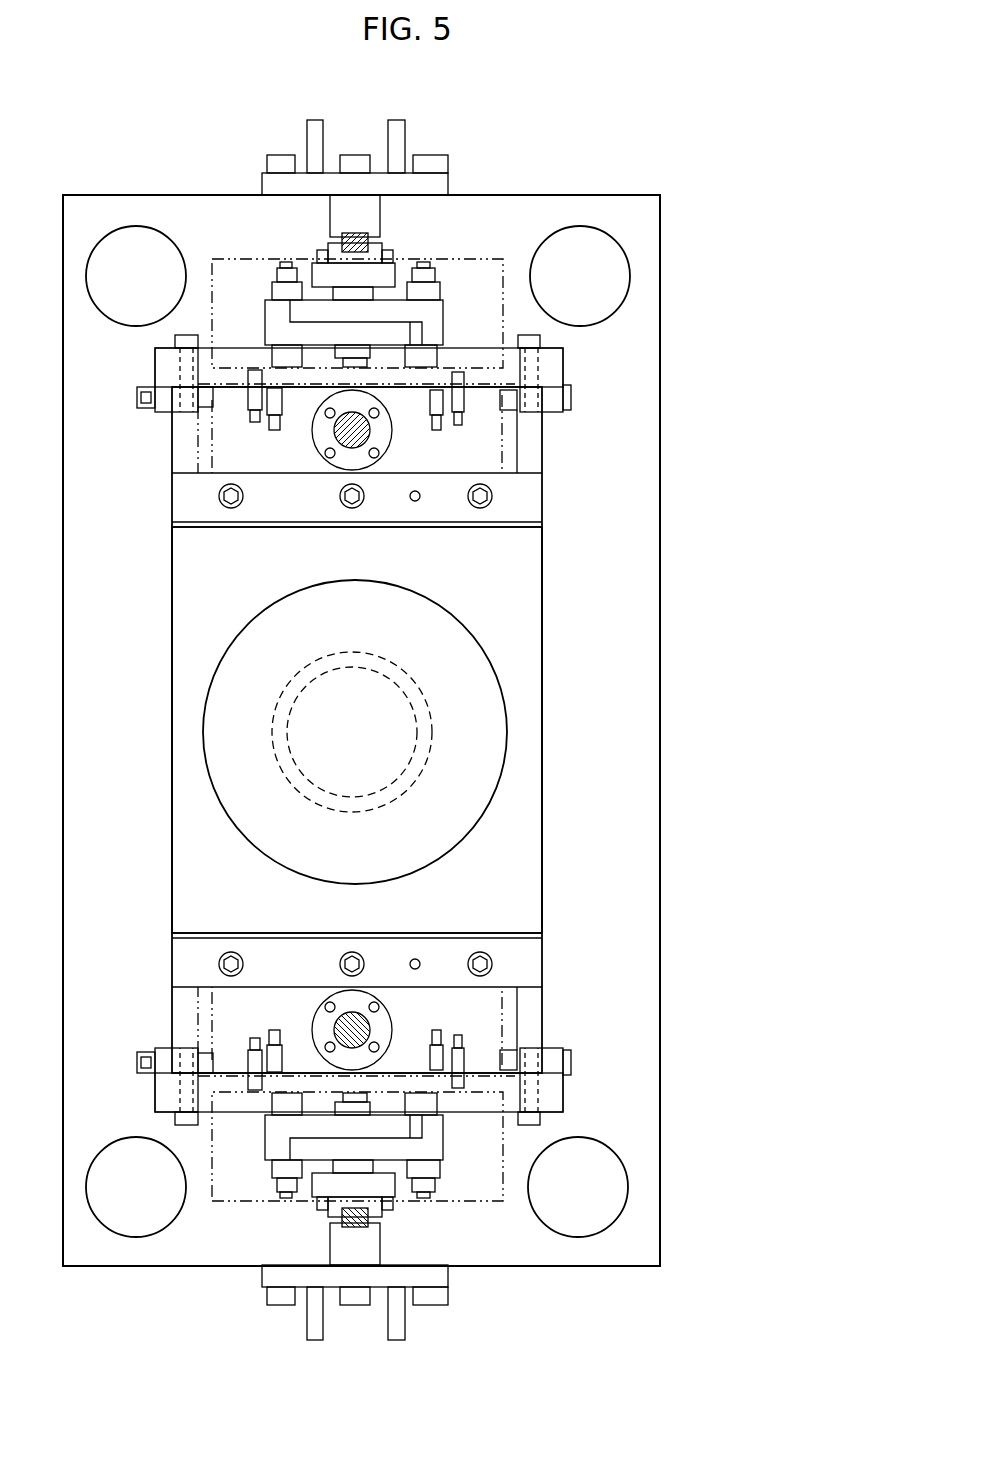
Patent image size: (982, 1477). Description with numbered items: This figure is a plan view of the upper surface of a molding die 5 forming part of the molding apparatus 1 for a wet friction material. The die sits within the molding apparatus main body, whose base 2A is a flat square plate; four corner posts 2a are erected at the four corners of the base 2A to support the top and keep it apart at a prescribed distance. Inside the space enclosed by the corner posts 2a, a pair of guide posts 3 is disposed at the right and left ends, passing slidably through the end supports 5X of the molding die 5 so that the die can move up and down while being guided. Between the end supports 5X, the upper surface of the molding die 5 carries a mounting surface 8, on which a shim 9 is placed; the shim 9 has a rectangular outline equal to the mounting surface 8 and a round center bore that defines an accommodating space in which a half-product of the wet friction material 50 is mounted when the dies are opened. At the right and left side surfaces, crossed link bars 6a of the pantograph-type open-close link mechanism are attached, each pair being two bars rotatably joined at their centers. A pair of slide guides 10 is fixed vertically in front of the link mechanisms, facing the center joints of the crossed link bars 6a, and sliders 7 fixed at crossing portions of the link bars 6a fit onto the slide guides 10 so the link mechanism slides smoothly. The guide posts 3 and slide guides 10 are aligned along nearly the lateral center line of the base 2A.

The molding apparatus 1 is at (688, 221).
The base 2A is at (658, 1122).
The corner posts 2a is at (129, 237).
The guide posts 3 is at (392, 435).
The molding die 5 is at (545, 601).
The end supports 5X is at (545, 436).
The crossed link bars 6a is at (353, 308).
The slider 7 is at (376, 246).
The mounting surface 8 is at (480, 758).
The shim 9 is at (525, 867).
The slide guide 10 is at (360, 232).
The wet friction material half-product 50 is at (427, 707).